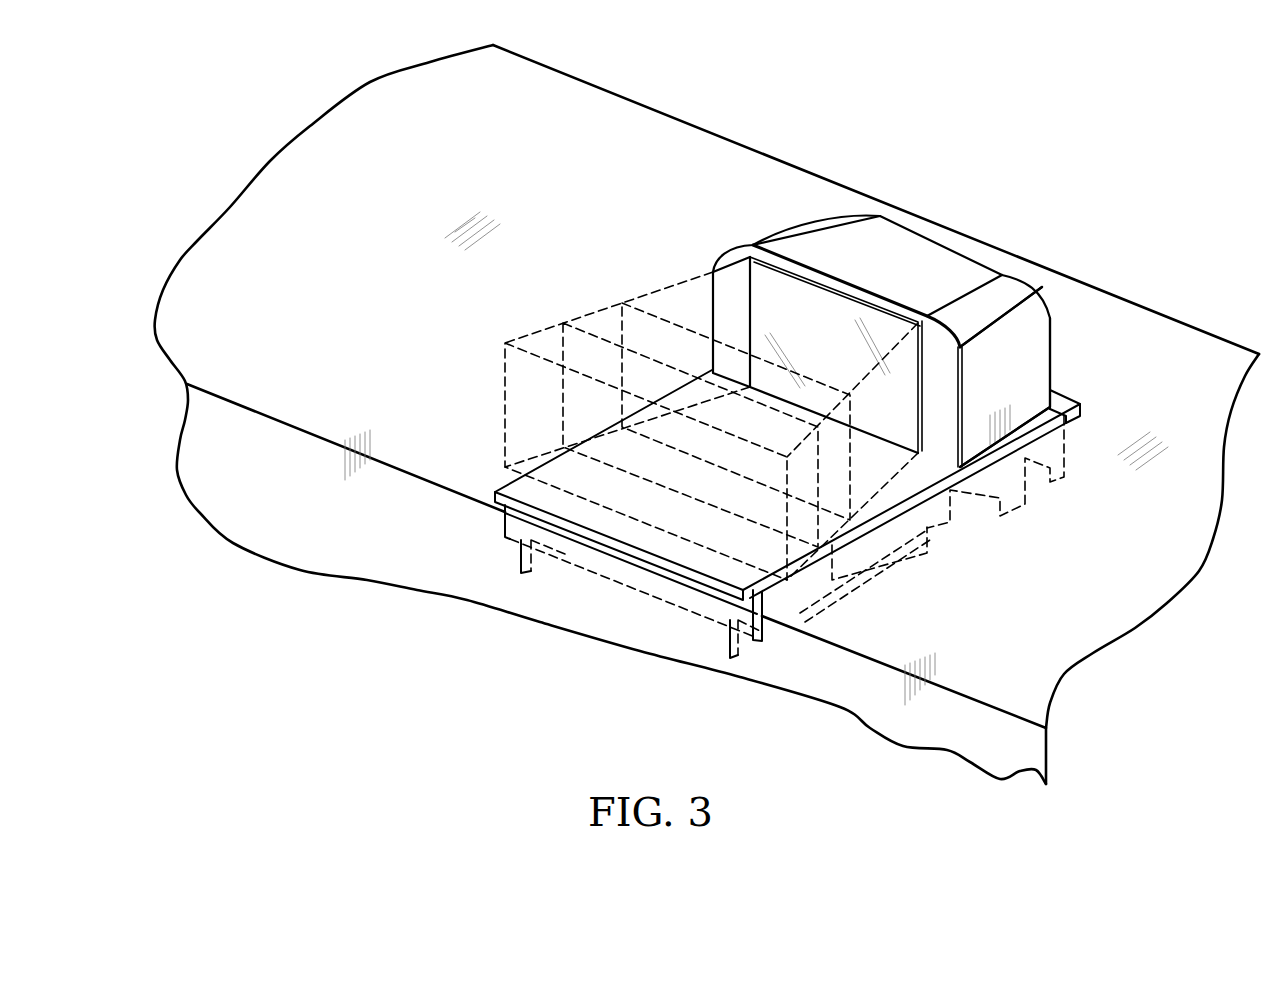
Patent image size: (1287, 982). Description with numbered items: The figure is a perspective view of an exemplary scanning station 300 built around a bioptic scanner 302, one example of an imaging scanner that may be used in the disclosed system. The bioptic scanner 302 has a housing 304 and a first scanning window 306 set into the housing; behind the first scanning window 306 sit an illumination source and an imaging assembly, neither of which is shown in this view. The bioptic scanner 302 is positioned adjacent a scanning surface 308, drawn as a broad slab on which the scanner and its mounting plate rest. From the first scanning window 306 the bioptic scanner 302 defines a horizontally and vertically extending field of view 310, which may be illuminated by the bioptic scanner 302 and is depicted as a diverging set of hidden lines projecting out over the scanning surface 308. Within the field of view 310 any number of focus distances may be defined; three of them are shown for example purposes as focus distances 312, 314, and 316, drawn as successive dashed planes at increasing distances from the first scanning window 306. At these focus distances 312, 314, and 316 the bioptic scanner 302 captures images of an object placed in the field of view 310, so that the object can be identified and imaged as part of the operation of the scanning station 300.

The scanning station 300 is at (237, 92).
The bioptic scanner 302 is at (914, 324).
The housing 304 is at (1027, 333).
The first scanning window 306 is at (885, 328).
The scanning surface 308 is at (447, 477).
The field of view 310 is at (680, 280).
The focus distance 312 is at (622, 302).
The focus distance 314 is at (562, 322).
The focus distance 316 is at (505, 344).